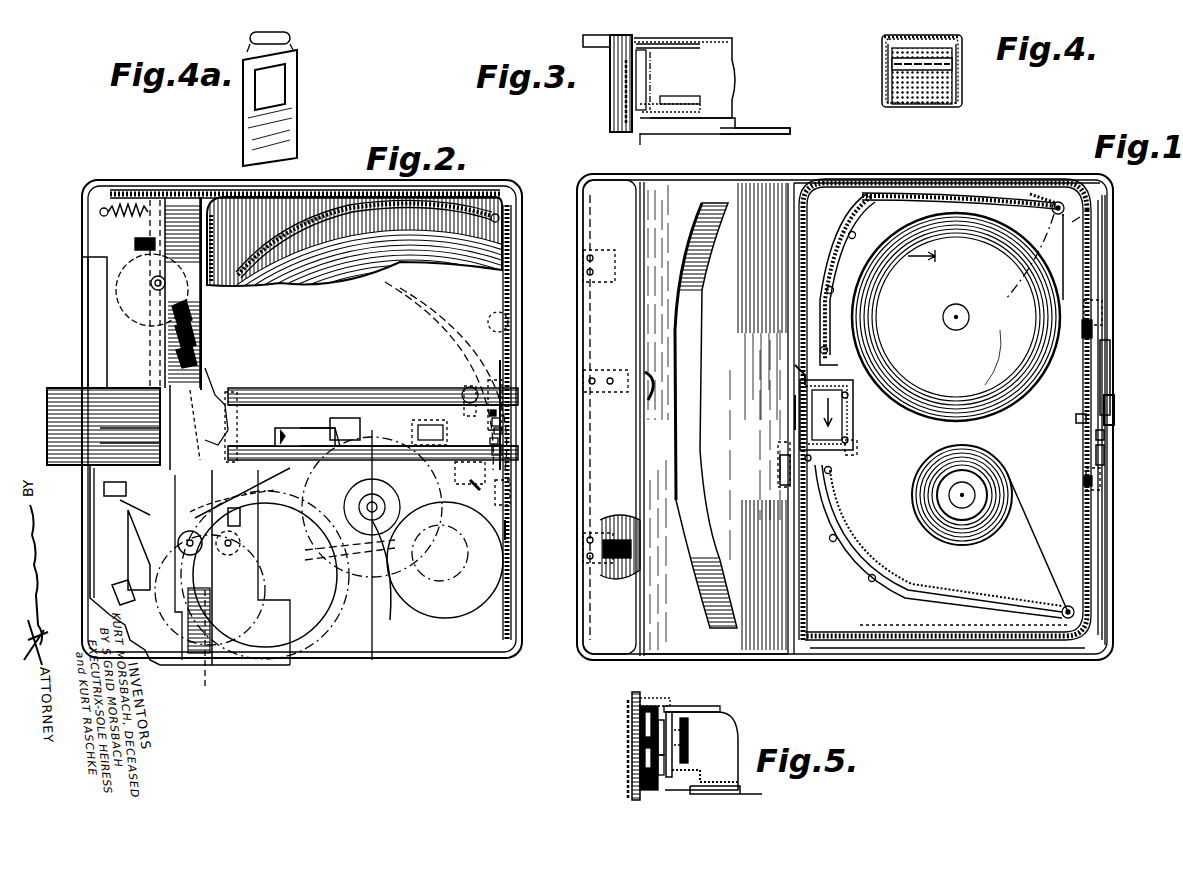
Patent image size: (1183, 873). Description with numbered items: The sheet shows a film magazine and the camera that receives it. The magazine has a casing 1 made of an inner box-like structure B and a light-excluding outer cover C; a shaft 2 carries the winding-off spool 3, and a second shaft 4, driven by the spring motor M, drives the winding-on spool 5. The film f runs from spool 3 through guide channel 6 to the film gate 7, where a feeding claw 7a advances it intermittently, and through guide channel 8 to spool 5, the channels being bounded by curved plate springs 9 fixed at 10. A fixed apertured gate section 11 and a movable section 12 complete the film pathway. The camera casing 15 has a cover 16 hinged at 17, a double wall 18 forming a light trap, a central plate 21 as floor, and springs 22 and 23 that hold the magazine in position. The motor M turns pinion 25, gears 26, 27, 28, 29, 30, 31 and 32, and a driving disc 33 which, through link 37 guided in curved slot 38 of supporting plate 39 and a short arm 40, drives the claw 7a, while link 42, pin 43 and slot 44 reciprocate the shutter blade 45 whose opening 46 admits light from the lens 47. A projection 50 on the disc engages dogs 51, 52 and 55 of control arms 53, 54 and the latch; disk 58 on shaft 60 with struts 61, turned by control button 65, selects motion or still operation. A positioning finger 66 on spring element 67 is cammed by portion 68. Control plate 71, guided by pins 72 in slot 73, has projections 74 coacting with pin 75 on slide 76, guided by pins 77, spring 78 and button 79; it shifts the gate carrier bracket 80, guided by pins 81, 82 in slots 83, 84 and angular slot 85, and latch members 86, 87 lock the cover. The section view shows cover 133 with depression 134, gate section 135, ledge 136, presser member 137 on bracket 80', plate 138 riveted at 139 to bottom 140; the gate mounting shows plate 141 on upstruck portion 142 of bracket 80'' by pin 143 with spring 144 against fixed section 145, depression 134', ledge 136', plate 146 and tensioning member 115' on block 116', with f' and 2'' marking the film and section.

In FIG. 2, the casing 1 is at (512, 215).
In FIG. 1, the casing 1 is at (1102, 556).
In FIG. 1, the shaft 2 is at (956, 334).
In FIG. 4, the winding-off film spool 3 is at (912, 106).
In FIG. 1, the winding-off film spool 3 is at (1040, 290).
In FIG. 2, the second shaft 4 is at (365, 536).
In FIG. 1, the second shaft 4 is at (970, 490).
In FIG. 1, the winding-on spool 5 is at (980, 470).
In FIG. 1, the guide channel 6 is at (880, 180).
In FIG. 1, the film gate 7 is at (795, 425).
In FIG. 2, the feeding claw 7a is at (232, 400).
In FIG. 1, the feeding claw 7a is at (778, 470).
In FIG. 1, the guide channel 8 is at (905, 632).
In FIG. 4, the curved plate springs 9 is at (954, 62).
In FIG. 1, the curved plate springs 9 is at (1020, 180).
In FIG. 1, the fixed spring end 10 is at (848, 252).
In FIG. 2, the fixed apertured gate section 11 is at (185, 415).
In FIG. 1, the fixed apertured gate section 11 is at (800, 382).
In FIG. 2, the movable gate section 12 is at (239, 403).
In FIG. 1, the movable gate section 12 is at (805, 402).
In FIG. 2, the camera casing 15 is at (512, 655).
In FIG. 1, the camera casing 15 is at (1110, 655).
In FIG. 1, the cover 16 is at (752, 656).
In FIG. 1, the hinge 17 is at (800, 656).
In FIG. 1, the double wall 18 is at (952, 648).
In FIG. 1, the central plate 21 is at (1100, 624).
In FIG. 1, the leaf spring 22 is at (722, 632).
In FIG. 1, the curved springs 23 is at (583, 252).
In FIG. 2, the pinion 25 is at (500, 525).
In FIG. 2, the gear 26 is at (470, 548).
In FIG. 2, the gear 27 is at (435, 618).
In FIG. 2, the gear 28 is at (382, 605).
In FIG. 2, the gear 29 is at (372, 540).
In FIG. 2, the gear 30 is at (316, 630).
In FIG. 2, the gear 31 is at (305, 660).
In FIG. 2, the gear 32 is at (225, 640).
In FIG. 2, the driving disc 33 is at (210, 649).
In FIG. 2, the link 37 is at (232, 493).
In FIG. 2, the curved slot 38 is at (238, 418).
In FIG. 2, the intermediate supporting plate 39 is at (248, 491).
In FIG. 2, the short arm 40 is at (175, 590).
In FIG. 2, the link 42 is at (242, 512).
In FIG. 4a, the pin 43 is at (292, 36).
In FIG. 2, the pin 43 is at (195, 322).
In FIG. 1, the pin 43 is at (856, 455).
In FIG. 2, the slot 44 is at (200, 340).
In FIG. 4a, the shutter blade 45 is at (292, 108).
In FIG. 2, the shutter blade 45 is at (200, 354).
In FIG. 4a, the opening 46 is at (288, 78).
In FIG. 2, the lens 47 is at (58, 388).
In FIG. 2, the projection 50 is at (210, 590).
In FIG. 2, the dog 51 is at (130, 570).
In FIG. 2, the dog 52 is at (118, 590).
In FIG. 2, the control arm 53 is at (120, 312).
In FIG. 2, the control arm 54 is at (140, 560).
In FIG. 2, the dog 55 is at (240, 540).
In FIG. 2, the disk 58 is at (120, 292).
In FIG. 2, the shaft 60 is at (150, 281).
In FIG. 2, the struts 61 is at (155, 255).
In FIG. 2, the control button 65 is at (133, 244).
In FIG. 2, the positioning finger 66 is at (222, 395).
In FIG. 2, the spring element 67 is at (170, 430).
In FIG. 2, the upwardly struck portion 68 is at (150, 443).
In FIG. 2, the control plate 71 is at (448, 390).
In FIG. 2, the pins 72 is at (505, 350).
In FIG. 2, the slot 73 is at (498, 412).
In FIG. 2, the right-angled projections 74 is at (503, 460).
In FIG. 2, the pin 75 is at (502, 422).
In FIG. 1, the pin 75 is at (1076, 420).
In FIG. 2, the slide 76 is at (500, 442).
In FIG. 1, the slide 76 is at (1104, 452).
In FIG. 2, the pins 77 is at (512, 492).
In FIG. 1, the pins 77 is at (1102, 302).
In FIG. 1, the wire spring 78 is at (1108, 348).
In FIG. 2, the button 79 is at (503, 432).
In FIG. 1, the button 79 is at (1114, 418).
In FIG. 2, the gate carrier bracket 80 is at (305, 407).
In FIG. 3, the bracket 80' is at (755, 143).
In FIG. 5, the bracket 80'' is at (747, 798).
In FIG. 2, the pin 81 is at (318, 428).
In FIG. 2, the pin 82 is at (425, 420).
In FIG. 2, the slot 83 is at (338, 418).
In FIG. 2, the slot 84 is at (468, 386).
In FIG. 2, the angular slot 85 is at (460, 469).
In FIG. 1, the cam faced latching member 86 is at (650, 375).
In FIG. 2, the cam faced member 87 is at (518, 410).
In FIG. 1, the cam faced member 87 is at (1104, 434).
In FIG. 5, the tensioning member 115' is at (739, 750).
In FIG. 5, the block 116' is at (728, 740).
In FIG. 3, the cover of the magazine 133 is at (732, 60).
In FIG. 3, the depression 134 is at (702, 40).
In FIG. 5, the guiding depression 134' is at (653, 692).
In FIG. 3, the fixed apertured gate section 135 is at (612, 76).
In FIG. 3, the ledge 136 is at (581, 91).
In FIG. 5, the ledge 136' is at (604, 752).
In FIG. 3, the presser member 137 is at (636, 94).
In FIG. 3, the plate 138 is at (700, 98).
In FIG. 3, the rivet 139 is at (700, 108).
In FIG. 3, the bottom of the magazine 140 is at (735, 122).
In FIG. 5, the movable gate plate 141 is at (738, 778).
In FIG. 5, the upstruck portion 142 is at (672, 706).
In FIG. 5, the headed pin 143 is at (640, 746).
In FIG. 5, the spring 144 is at (640, 720).
In FIG. 5, the fixed gate section 145 is at (640, 768).
In FIG. 5, the plate 146 is at (674, 718).
In FIG. 4, the inner box-like structure B is at (884, 96).
In FIG. 1, the inner box-like structure B is at (1092, 205).
In FIG. 4, the outer cover C is at (962, 96).
In FIG. 1, the outer cover C is at (1098, 222).
In FIG. 4, the film f is at (899, 38).
In FIG. 1, the film f is at (964, 409).
In FIG. 3, the film strip f' is at (599, 96).
In FIG. 5, the film strip f' is at (593, 745).
In FIG. 2, the spring motor M is at (462, 315).
In FIG. 3, the hub section 2'' is at (641, 147).